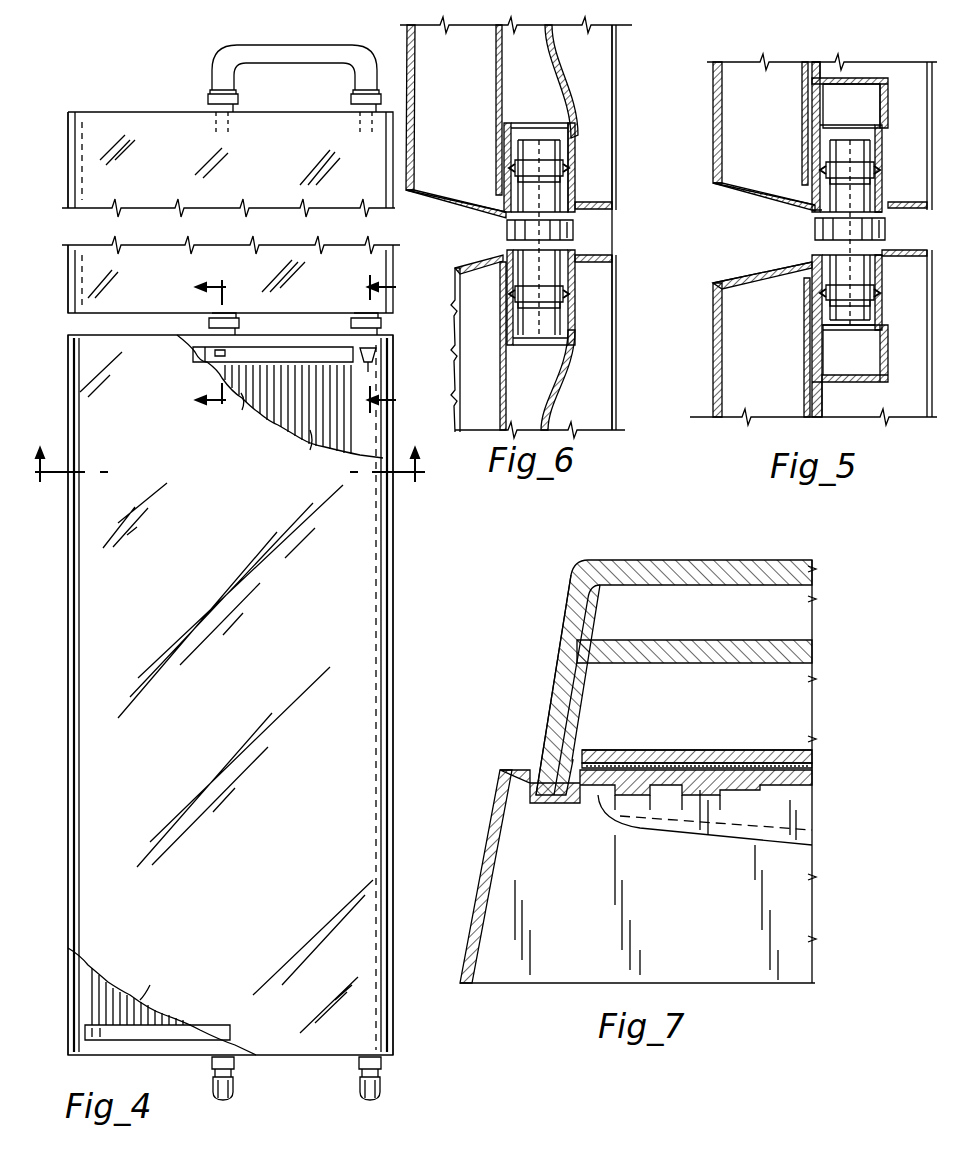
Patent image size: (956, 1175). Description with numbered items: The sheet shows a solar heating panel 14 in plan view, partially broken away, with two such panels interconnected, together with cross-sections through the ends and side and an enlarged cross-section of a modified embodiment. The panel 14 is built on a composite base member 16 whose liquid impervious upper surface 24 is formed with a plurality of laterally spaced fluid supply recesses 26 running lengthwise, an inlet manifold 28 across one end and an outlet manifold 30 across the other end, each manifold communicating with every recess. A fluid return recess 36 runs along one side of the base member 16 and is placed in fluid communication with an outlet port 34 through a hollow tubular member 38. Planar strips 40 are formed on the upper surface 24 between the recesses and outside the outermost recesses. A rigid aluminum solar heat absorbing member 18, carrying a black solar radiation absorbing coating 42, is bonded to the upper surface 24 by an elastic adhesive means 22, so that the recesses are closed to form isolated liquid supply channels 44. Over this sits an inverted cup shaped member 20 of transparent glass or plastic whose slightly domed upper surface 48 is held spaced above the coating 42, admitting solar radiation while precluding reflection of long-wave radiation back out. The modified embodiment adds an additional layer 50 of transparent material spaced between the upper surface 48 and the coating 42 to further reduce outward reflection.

In FIG. 4, the solar heating panel 14 is at (395, 665).
In FIG. 7, the solar heating panel 14 is at (527, 708).
In FIG. 6, the base member 16 is at (600, 214).
In FIG. 5, the base member 16 is at (915, 62).
In FIG. 7, the base member 16 is at (500, 826).
In FIG. 6, the solar heat absorbing member 18 is at (500, 152).
In FIG. 5, the solar heat absorbing member 18 is at (805, 150).
In FIG. 7, the solar heat absorbing member 18 is at (636, 750).
In FIG. 4, the inverted cup shaped member 20 is at (84, 172).
In FIG. 6, the inverted cup shaped member 20 is at (457, 205).
In FIG. 5, the inverted cup shaped member 20 is at (769, 268).
In FIG. 7, the inverted cup shaped member 20 is at (578, 563).
In FIG. 7, the elastic adhesive means 22 is at (606, 750).
In FIG. 7, the liquid impervious upper surface 24 is at (805, 775).
In FIG. 4, the fluid supply recesses 26 is at (268, 408).
In FIG. 4, the inlet manifold 28 is at (165, 1040).
In FIG. 5, the inlet manifold 28 is at (850, 103).
In FIG. 4, the outlet manifold 30 is at (215, 372).
In FIG. 5, the outlet manifold 30 is at (855, 353).
In FIG. 6, the outlet port 34 is at (560, 196).
In FIG. 5, the outlet port 34 is at (850, 232).
In FIG. 4, the fluid return recess 36 is at (372, 380).
In FIG. 6, the fluid return recess 36 is at (567, 227).
In FIG. 4, the hollow tubular member 38 is at (300, 52).
In FIG. 4, the strips 40 is at (242, 395).
In FIG. 7, the strips 40 is at (670, 796).
In FIG. 6, the solar radiation absorbing coating 42 is at (495, 84).
In FIG. 5, the solar radiation absorbing coating 42 is at (800, 96).
In FIG. 7, the solar radiation absorbing coating 42 is at (660, 750).
In FIG. 5, the liquid supply channels 44 is at (800, 74).
In FIG. 7, the liquid supply channels 44 is at (756, 768).
In FIG. 4, the upper surface 48 is at (226, 584).
In FIG. 6, the upper surface 48 is at (406, 46).
In FIG. 5, the upper surface 48 is at (713, 86).
In FIG. 7, the upper surface 48 is at (712, 560).
In FIG. 7, the additional layer 50 is at (756, 640).